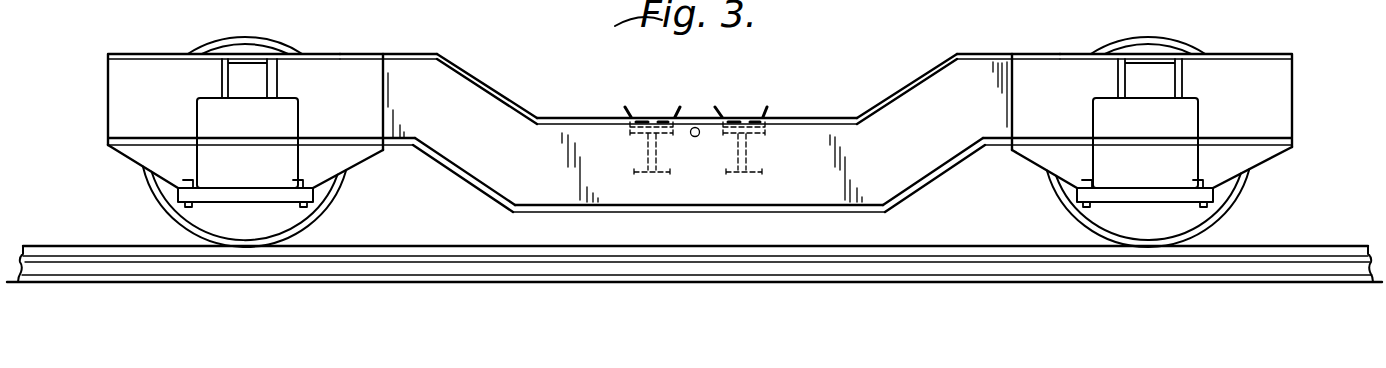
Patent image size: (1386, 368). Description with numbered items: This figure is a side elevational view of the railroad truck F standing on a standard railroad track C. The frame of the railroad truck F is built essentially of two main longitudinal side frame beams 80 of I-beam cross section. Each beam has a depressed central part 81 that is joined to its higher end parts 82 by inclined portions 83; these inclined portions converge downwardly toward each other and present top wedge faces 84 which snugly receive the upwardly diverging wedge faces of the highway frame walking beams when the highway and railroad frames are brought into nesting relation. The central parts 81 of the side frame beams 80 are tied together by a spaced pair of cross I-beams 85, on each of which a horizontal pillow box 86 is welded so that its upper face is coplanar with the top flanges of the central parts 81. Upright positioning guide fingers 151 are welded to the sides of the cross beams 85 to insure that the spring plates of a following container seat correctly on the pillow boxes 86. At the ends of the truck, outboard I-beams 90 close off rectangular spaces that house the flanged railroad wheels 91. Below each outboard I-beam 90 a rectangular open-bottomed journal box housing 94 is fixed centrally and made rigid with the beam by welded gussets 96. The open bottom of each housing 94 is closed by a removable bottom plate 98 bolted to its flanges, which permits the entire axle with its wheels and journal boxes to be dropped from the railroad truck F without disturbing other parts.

The main longitudinal side frame beam 80 is at (847, 119).
The central part of side frame beam 81 is at (593, 116).
The higher end part of side frame beam 82 is at (368, 53).
The inclined portion 83 is at (510, 57).
The top wedge face 84 is at (518, 102).
The cross I-beam 85 is at (642, 173).
The pillow box 86 is at (653, 117).
The I-beam 90 is at (114, 70).
The flanged railroad wheel 91 is at (178, 218).
The journal box housing 94 is at (270, 124).
The gusset 96 is at (266, 80).
The removable bottom plate 98 is at (213, 200).
The positioning guide finger 151 is at (622, 110).
The railroad truck F is at (96, 112).
The railroad track C is at (1314, 247).